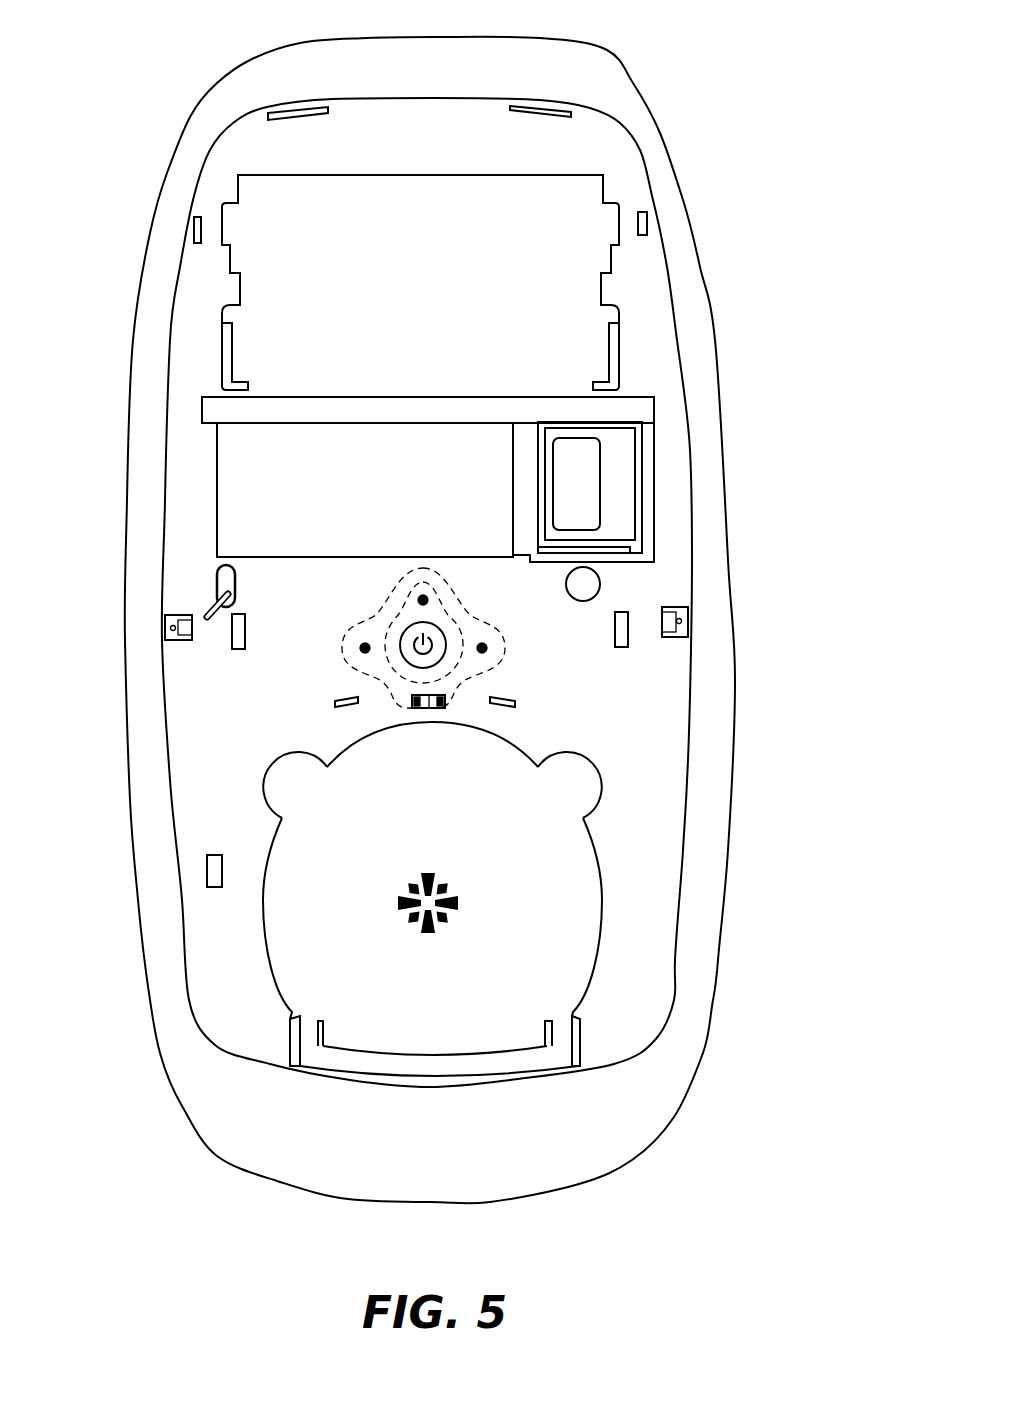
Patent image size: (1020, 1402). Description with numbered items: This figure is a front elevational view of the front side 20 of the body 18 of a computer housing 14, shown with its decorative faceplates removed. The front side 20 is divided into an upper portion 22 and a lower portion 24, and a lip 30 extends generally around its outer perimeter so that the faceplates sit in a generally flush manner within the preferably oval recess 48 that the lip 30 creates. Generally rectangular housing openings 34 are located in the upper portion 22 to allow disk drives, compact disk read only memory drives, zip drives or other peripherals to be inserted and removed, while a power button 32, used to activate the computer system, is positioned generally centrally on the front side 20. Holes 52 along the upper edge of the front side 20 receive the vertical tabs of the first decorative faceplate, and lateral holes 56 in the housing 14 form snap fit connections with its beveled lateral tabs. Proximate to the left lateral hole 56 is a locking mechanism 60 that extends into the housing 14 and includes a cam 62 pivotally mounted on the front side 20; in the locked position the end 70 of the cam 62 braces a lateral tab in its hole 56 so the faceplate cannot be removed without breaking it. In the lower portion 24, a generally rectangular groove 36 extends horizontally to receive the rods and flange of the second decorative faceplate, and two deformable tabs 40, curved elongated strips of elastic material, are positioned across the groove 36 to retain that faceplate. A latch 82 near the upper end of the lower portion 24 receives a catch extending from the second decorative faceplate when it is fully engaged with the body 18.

The housing 14 is at (652, 74).
The body 18 is at (652, 738).
The front side 20 is at (652, 829).
The upper portion 22 is at (495, 154).
The lower portion 24 is at (238, 952).
The lip 30 is at (725, 781).
The power button 32 is at (440, 640).
The housing openings 34 is at (443, 284).
The groove 36 is at (389, 1066).
The deformable tab 40 is at (306, 1050).
The oval recess 48 is at (648, 903).
The holes 52 is at (292, 107).
The lateral holes 56 is at (165, 627).
The locking mechanism 60 is at (247, 596).
The cam 62 is at (217, 597).
The end of the cam 70 is at (213, 619).
The latch 82 is at (412, 700).